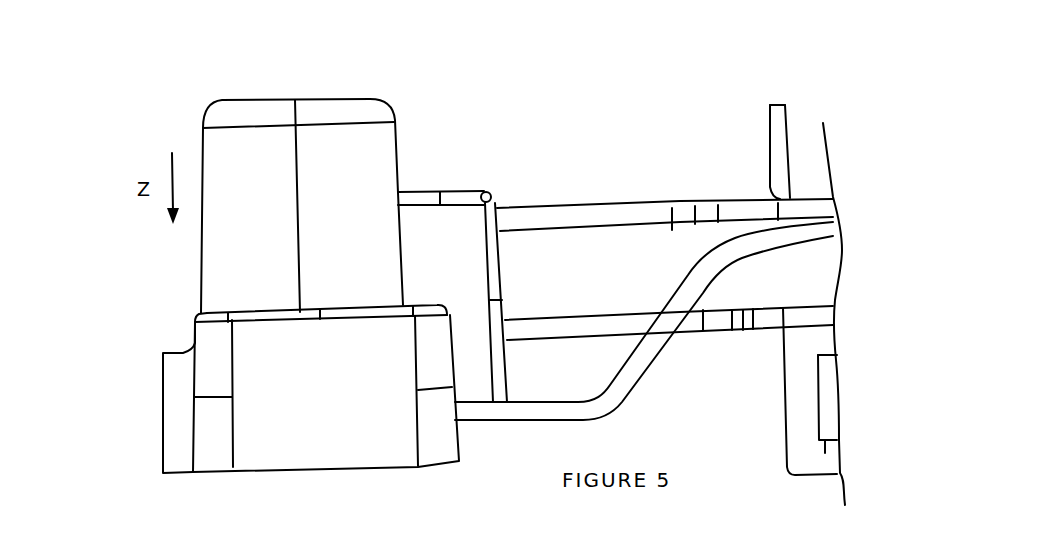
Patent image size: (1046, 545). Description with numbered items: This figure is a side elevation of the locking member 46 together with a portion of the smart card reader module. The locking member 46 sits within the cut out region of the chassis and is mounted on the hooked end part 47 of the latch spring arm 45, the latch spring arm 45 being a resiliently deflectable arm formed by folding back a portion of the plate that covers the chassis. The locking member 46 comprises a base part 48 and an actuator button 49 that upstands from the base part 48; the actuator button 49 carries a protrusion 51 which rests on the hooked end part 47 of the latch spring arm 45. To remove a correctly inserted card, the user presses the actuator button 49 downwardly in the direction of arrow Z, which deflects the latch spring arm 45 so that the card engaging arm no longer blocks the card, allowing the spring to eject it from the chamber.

The latch spring arm 45 is at (772, 237).
The locking member 46 is at (434, 153).
The hooked end part 47 is at (535, 421).
The base part 48 is at (315, 410).
The actuator button 49 is at (260, 99).
The protrusion 51 is at (462, 228).